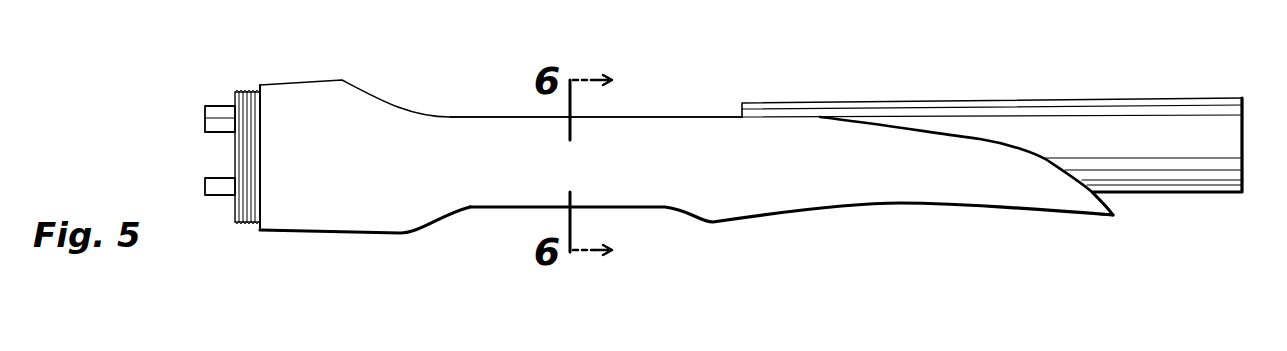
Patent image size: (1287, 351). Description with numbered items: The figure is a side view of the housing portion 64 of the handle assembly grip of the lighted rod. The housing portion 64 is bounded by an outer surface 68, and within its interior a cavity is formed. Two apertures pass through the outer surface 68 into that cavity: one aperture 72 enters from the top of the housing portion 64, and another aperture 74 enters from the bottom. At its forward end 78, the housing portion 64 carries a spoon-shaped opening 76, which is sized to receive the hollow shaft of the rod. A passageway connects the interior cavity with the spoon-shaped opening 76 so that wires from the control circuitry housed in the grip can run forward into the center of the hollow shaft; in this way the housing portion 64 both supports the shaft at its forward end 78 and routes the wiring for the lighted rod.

The housing portion 64 is at (308, 81).
The outer surface 68 is at (310, 192).
The aperture 72 is at (625, 212).
The aperture 74 is at (630, 116).
The spoon-shaped opening 76 is at (957, 133).
The forward end 78 is at (1113, 215).